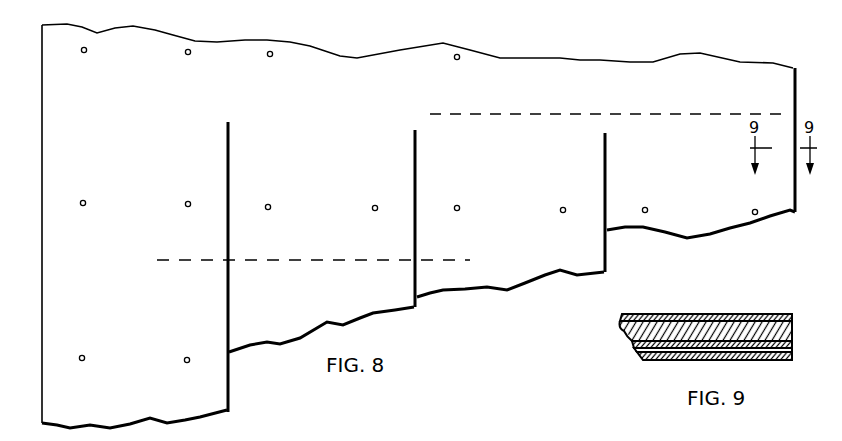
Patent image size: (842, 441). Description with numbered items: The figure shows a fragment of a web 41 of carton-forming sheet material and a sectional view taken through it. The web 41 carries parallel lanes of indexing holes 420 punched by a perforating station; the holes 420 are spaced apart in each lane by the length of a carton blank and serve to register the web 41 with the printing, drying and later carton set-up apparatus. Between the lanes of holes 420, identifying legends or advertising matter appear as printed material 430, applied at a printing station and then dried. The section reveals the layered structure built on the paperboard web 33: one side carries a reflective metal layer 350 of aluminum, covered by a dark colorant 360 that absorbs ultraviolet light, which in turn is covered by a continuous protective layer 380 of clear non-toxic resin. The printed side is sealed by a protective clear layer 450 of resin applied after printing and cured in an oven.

In FIG. 8, the web 41 is at (600, 63).
In FIG. 8, the indexing holes 420 is at (270, 57).
In FIG. 8, the printed material 430 is at (338, 108).
In FIG. 9, the protective clear layer 450 is at (622, 316).
In FIG. 9, the web 33 is at (620, 328).
In FIG. 9, the metal layer 350 is at (630, 344).
In FIG. 9, the colorant 360 is at (637, 350).
In FIG. 9, the protective layer 380 is at (657, 357).